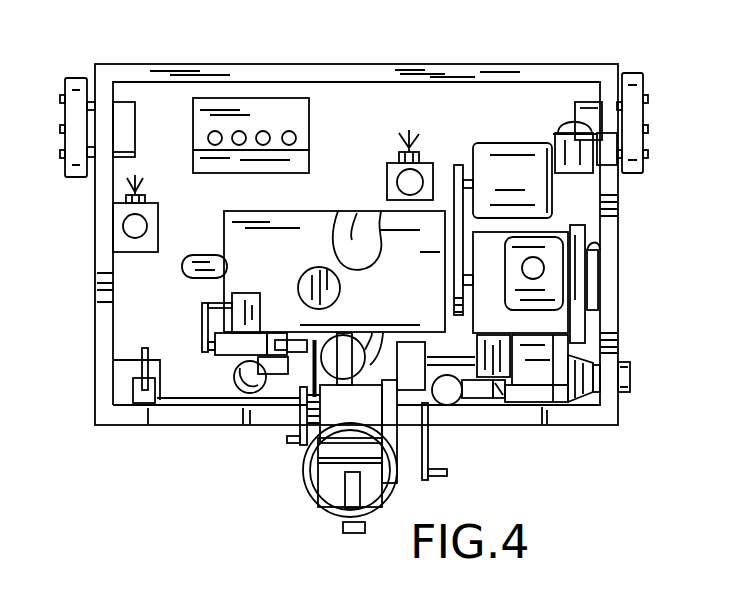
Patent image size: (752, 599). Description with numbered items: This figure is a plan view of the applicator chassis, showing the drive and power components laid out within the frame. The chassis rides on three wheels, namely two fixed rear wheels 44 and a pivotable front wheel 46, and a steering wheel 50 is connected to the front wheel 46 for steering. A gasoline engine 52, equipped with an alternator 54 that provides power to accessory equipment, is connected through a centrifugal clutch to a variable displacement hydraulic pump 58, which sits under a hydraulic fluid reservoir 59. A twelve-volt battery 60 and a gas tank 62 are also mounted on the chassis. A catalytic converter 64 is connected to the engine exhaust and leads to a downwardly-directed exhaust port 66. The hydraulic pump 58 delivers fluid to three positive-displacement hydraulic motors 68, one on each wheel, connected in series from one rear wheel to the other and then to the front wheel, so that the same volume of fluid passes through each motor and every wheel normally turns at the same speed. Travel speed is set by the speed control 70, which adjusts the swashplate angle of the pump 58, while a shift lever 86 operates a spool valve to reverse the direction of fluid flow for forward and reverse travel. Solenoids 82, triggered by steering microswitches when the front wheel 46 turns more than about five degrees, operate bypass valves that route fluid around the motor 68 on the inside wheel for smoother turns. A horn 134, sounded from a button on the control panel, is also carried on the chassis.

The fixed rear wheel 44 is at (75, 112).
The pivotable front wheel 46 is at (343, 528).
The steering wheel 50 is at (312, 496).
The gasoline engine 52 is at (568, 322).
The alternator 54 is at (503, 160).
The variable displacement hydraulic pump 58 is at (356, 212).
The hydraulic fluid reservoir 59 is at (297, 233).
The 12-volt battery 60 is at (213, 108).
The gas tank 62 is at (553, 274).
The catalytic converter 64 is at (566, 378).
The exhaust port 66 is at (628, 393).
The hydraulic motor 68 is at (122, 103).
The speed control 70 is at (202, 320).
The solenoid 82 is at (426, 163).
The shift lever 86 is at (430, 457).
The horn 134 is at (247, 386).